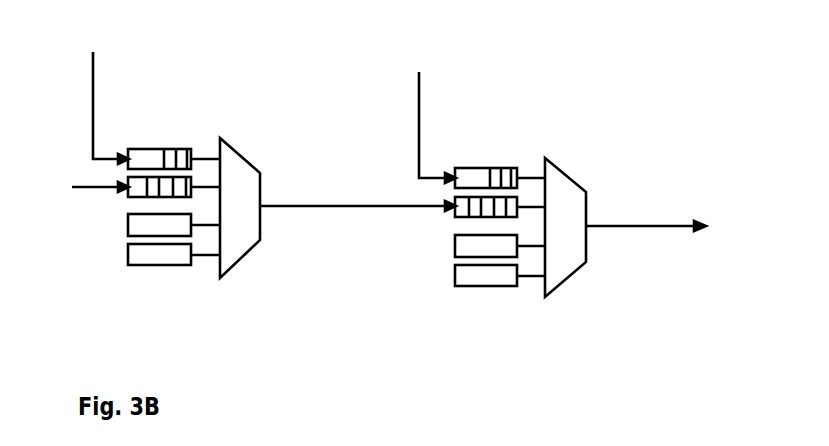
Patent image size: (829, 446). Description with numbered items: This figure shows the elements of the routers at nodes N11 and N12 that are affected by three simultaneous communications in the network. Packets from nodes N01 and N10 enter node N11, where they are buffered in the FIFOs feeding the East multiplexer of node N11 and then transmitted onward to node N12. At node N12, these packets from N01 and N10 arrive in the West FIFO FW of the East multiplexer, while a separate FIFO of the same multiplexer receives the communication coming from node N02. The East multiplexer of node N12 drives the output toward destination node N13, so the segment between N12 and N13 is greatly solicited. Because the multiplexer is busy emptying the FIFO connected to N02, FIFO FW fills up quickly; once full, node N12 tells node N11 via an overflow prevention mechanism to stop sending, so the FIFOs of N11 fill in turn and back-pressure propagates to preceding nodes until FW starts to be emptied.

The node N01 is at (102, 95).
The node N02 is at (430, 118).
The node N10 is at (77, 190).
The router node N11 is at (292, 191).
The router node N12 is at (479, 206).
The node N13 is at (667, 228).
The West FIFO FW is at (466, 217).